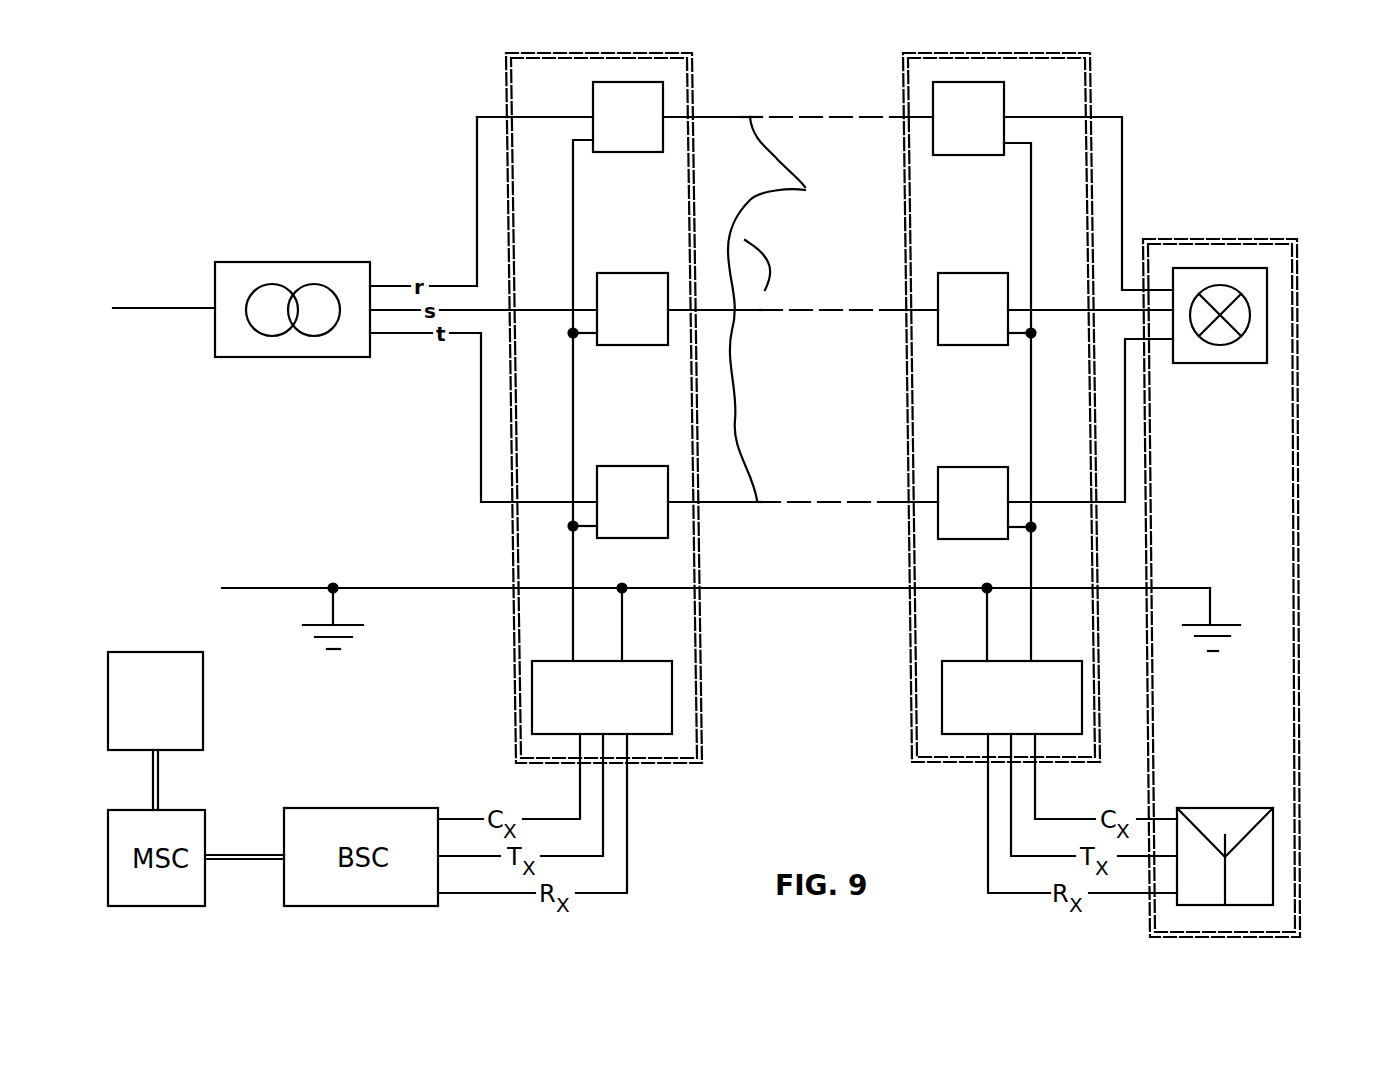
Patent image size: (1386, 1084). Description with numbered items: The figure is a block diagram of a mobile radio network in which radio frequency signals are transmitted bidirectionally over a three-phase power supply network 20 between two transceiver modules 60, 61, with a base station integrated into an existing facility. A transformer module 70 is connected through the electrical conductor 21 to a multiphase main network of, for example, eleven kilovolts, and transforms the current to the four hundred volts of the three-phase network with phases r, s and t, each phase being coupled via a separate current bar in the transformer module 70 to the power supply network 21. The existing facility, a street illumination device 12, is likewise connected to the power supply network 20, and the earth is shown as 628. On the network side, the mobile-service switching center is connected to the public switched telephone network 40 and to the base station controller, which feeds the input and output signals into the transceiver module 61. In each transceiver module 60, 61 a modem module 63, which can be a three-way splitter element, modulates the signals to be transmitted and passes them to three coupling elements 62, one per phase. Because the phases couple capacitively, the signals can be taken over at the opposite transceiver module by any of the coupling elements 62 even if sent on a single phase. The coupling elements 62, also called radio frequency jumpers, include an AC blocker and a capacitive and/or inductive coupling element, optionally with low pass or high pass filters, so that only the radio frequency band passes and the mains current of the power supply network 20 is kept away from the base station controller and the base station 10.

The base station 10 is at (1226, 808).
The street illumination device 12 is at (1250, 294).
The power supply network 20 is at (797, 194).
The electrical conductor 21 is at (155, 308).
The public switched telephone network 40 is at (152, 670).
The transceiver module 60 is at (1075, 97).
The transceiver module 61 is at (528, 97).
The coupling element 62 is at (648, 138).
The modem module 63 is at (662, 696).
The transformer module 70 is at (275, 272).
The earth 628 is at (345, 632).